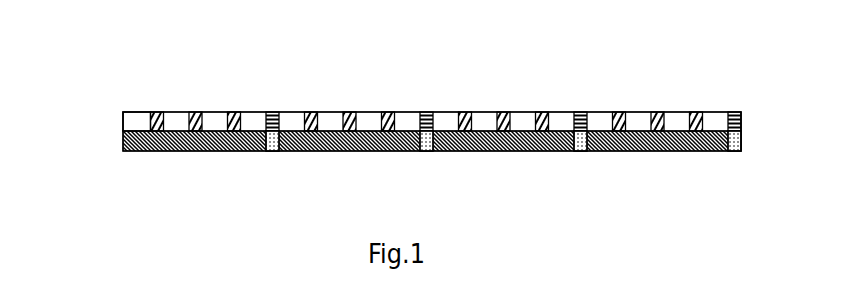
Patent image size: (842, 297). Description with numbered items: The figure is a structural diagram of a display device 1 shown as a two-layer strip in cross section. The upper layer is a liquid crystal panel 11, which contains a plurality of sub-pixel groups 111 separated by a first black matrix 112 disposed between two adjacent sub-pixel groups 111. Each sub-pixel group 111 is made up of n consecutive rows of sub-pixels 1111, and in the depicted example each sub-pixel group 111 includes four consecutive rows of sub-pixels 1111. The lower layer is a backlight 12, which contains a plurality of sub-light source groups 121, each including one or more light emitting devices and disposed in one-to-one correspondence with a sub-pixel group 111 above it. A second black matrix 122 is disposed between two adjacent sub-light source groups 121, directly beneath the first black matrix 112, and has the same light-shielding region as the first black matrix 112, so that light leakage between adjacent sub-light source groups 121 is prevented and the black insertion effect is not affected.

The display device 1 is at (577, 50).
The liquid crystal panel 11 is at (121, 115).
The sub-pixel group 111 is at (632, 99).
The sub-pixel 1111 is at (133, 112).
The first black matrix 112 is at (280, 110).
The backlight 12 is at (118, 150).
The sub-light source group 121 is at (210, 152).
The second black matrix 122 is at (275, 152).